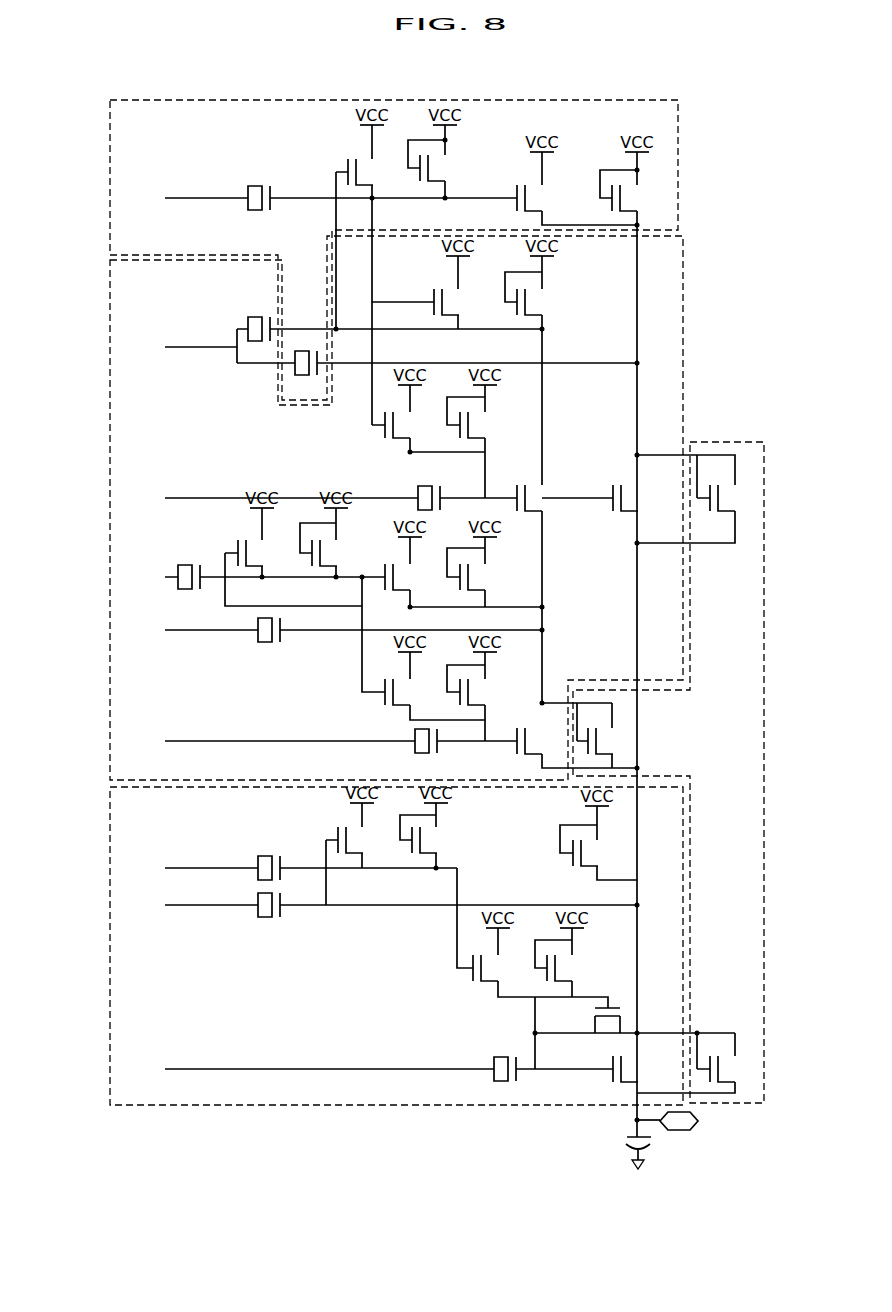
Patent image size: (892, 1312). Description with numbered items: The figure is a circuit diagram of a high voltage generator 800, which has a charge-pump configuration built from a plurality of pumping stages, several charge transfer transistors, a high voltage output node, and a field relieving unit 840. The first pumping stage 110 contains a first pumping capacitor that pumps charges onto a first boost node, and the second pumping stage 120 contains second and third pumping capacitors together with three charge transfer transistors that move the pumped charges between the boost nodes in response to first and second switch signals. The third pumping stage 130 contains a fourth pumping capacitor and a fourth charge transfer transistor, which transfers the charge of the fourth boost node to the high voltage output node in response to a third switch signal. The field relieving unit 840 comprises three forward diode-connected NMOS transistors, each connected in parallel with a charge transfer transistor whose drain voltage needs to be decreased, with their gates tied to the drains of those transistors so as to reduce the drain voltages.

The high voltage generator 800 is at (637, 95).
The first pumping stage 110 is at (110, 176).
The second pumping stage 120 is at (110, 438).
The third pumping stage 130 is at (110, 853).
The field relieving unit 840 is at (728, 441).